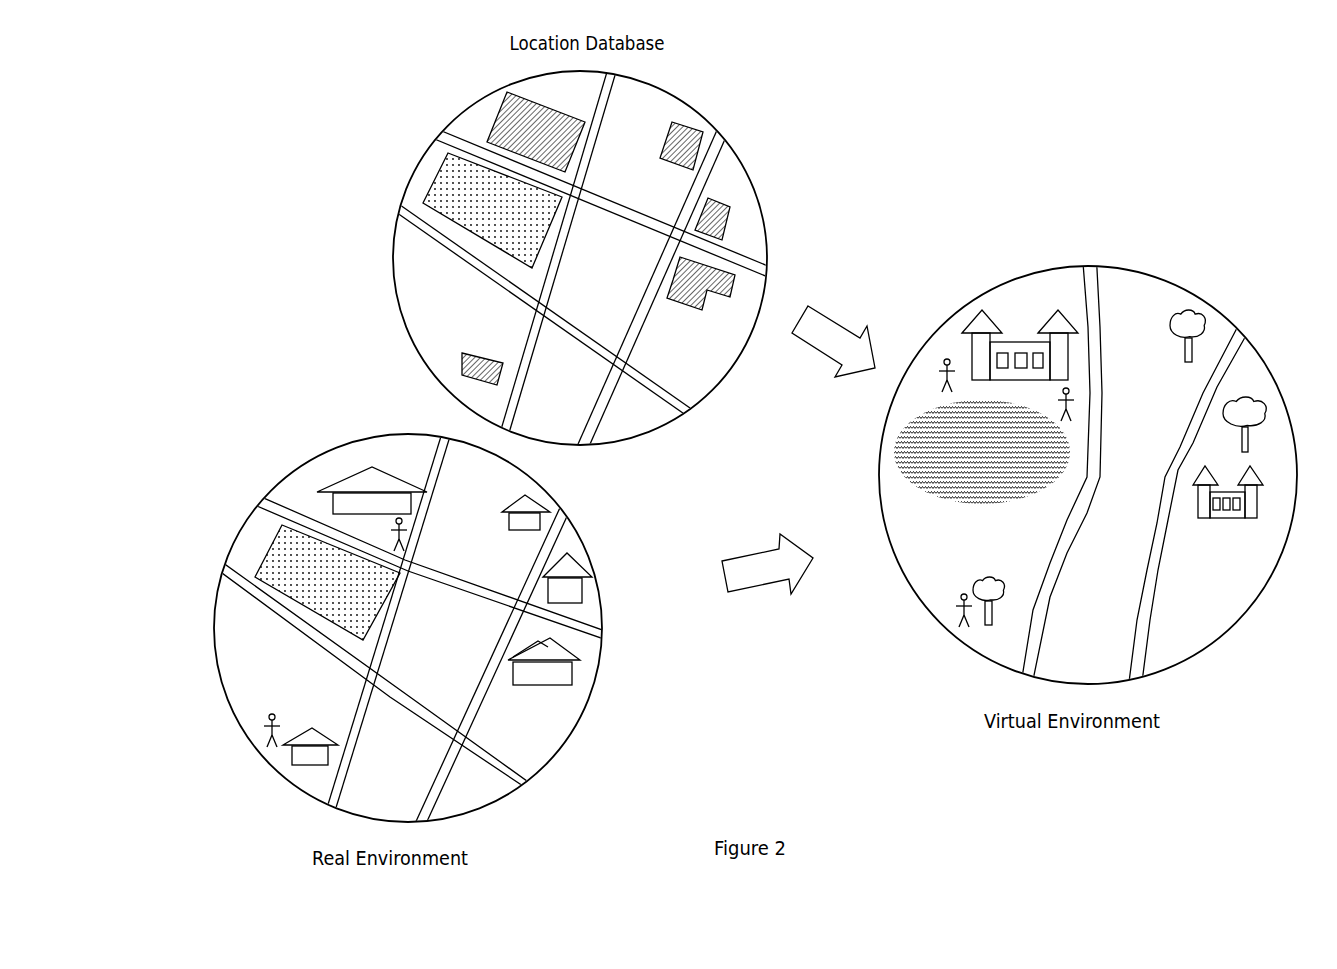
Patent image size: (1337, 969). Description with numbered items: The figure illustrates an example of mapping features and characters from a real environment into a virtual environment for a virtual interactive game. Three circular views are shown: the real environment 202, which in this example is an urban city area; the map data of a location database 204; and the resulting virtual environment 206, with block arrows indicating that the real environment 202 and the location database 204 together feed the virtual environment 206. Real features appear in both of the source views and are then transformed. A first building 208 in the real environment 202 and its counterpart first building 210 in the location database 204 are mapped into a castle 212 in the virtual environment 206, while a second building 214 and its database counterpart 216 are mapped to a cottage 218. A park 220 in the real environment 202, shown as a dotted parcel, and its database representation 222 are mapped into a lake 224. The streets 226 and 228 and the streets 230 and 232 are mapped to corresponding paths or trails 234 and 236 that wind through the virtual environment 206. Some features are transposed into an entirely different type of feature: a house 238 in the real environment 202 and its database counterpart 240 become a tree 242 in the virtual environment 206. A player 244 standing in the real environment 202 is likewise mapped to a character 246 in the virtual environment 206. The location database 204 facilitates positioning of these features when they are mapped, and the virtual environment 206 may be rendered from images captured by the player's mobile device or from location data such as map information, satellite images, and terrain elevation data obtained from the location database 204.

The real environment 202 is at (408, 608).
The location database 204 is at (580, 255).
The virtual environment 206 is at (808, 455).
The first building 208 is at (372, 476).
The first building 210 is at (536, 123).
The castle 212 is at (1020, 343).
The second building 214 is at (544, 683).
The second building 216 is at (701, 303).
The cottage 218 is at (1229, 513).
The park 220 is at (291, 573).
The park 222 is at (458, 198).
The lake 224 is at (947, 446).
The street 226 is at (388, 622).
The street 228 is at (560, 244).
The street 230 is at (496, 658).
The street 232 is at (656, 281).
The path or trail 234 is at (1066, 470).
The path or trail 236 is at (1182, 497).
The house 238 is at (310, 725).
The house 240 is at (470, 346).
The tree 242 is at (977, 580).
The player 244 is at (429, 534).
The character 246 is at (1100, 404).